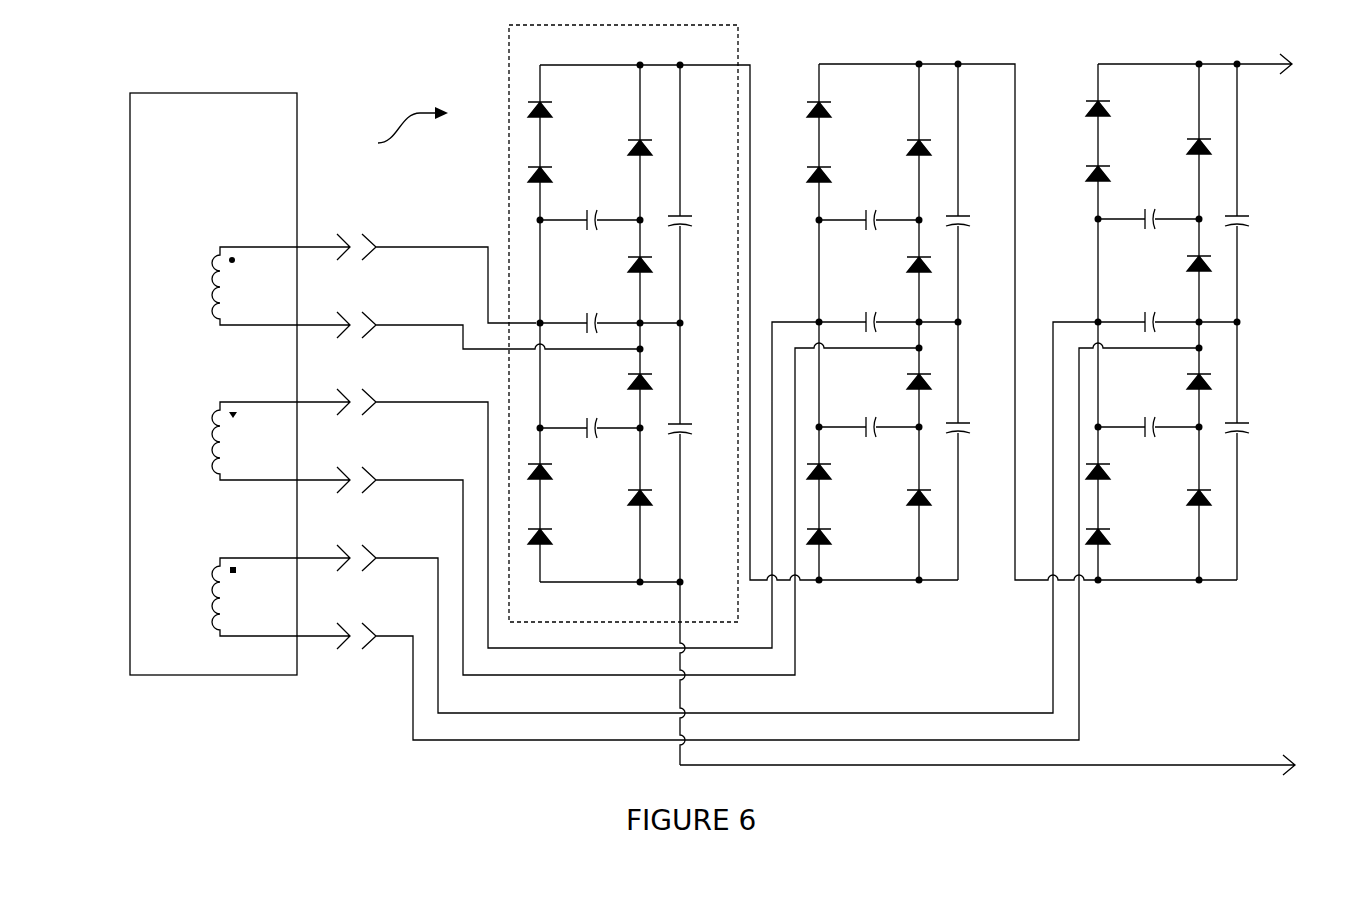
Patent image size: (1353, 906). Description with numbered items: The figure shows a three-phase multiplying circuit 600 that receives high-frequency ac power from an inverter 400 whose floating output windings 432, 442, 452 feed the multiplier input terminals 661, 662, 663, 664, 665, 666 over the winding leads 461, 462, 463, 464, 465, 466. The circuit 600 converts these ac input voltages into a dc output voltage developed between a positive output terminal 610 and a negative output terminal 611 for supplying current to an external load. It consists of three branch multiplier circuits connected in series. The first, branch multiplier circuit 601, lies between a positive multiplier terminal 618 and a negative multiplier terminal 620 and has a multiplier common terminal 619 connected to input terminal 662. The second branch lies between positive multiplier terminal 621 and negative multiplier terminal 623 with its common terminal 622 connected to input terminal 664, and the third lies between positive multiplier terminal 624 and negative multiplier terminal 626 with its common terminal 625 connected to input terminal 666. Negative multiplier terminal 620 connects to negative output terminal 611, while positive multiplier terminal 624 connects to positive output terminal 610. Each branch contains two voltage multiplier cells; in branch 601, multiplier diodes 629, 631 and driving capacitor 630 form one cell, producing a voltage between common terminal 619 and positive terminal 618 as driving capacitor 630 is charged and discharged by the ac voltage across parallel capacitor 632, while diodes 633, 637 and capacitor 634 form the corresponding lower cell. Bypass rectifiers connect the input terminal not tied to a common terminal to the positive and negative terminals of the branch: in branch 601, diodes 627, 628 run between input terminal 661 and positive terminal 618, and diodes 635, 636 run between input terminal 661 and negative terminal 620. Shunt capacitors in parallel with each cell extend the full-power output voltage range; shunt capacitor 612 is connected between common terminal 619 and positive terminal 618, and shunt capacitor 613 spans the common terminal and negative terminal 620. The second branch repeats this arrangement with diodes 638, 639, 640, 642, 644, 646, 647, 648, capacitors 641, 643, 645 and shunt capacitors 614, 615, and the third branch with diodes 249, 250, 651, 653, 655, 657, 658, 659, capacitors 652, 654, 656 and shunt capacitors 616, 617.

The inverter 400 is at (207, 676).
The winding 432 is at (214, 264).
The winding 442 is at (214, 419).
The winding 452 is at (214, 574).
The winding lead 461 is at (309, 245).
The winding lead 462 is at (309, 323).
The winding lead 463 is at (309, 400).
The winding lead 464 is at (309, 478).
The winding lead 465 is at (309, 556).
The winding lead 466 is at (309, 634).
The multiplier input terminal 661 is at (373, 245).
The multiplier input terminal 662 is at (373, 323).
The multiplier input terminal 663 is at (373, 400).
The multiplier input terminal 664 is at (373, 478).
The multiplier input terminal 665 is at (373, 556).
The multiplier input terminal 666 is at (373, 634).
The three-phase multiplying circuit 600 is at (392, 131).
The branch multiplier circuit 601 is at (509, 60).
The positive output terminal 610 is at (1253, 62).
The negative output terminal 611 is at (1253, 763).
The shunt capacitor 612 is at (684, 229).
The filter capacitor 613 is at (684, 437).
The filter capacitor 614 is at (962, 229).
The filter capacitor 615 is at (962, 437).
The shunt capacitor 616 is at (1242, 229).
The filter capacitor 617 is at (1242, 437).
The positive multiplier terminal 618 is at (593, 65).
The multiplier common terminal 619 is at (681, 322).
The negative multiplier terminal 620 is at (586, 583).
The positive multiplier terminal 621 is at (873, 64).
The multiplier common terminal 622 is at (960, 322).
The negative multiplier terminal 623 is at (865, 581).
The positive multiplier terminal 624 is at (1141, 64).
The multiplier common terminal 625 is at (1240, 322).
The negative multiplier terminal 626 is at (1144, 581).
The diode 627 is at (553, 107).
The diode 628 is at (553, 172).
The multiplier diode 629 is at (627, 148).
The driving capacitor 630 is at (587, 218).
The multiplier diode 631 is at (627, 265).
The parallel capacitor 632 is at (587, 321).
The diode 633 is at (627, 383).
The capacitor 634 is at (587, 426).
The diode 635 is at (553, 470).
The diode 636 is at (553, 537).
The diode 637 is at (627, 498).
The diode 638 is at (832, 106).
The diode 639 is at (832, 172).
The diode 640 is at (906, 147).
The capacitor 641 is at (866, 218).
The diode 642 is at (906, 265).
The capacitor 643 is at (866, 321).
The diode 644 is at (906, 383).
The capacitor 645 is at (866, 426).
The diode 646 is at (832, 470).
The diode 647 is at (832, 537).
The diode 648 is at (906, 498).
The diode 249 is at (1085, 112).
The diode 250 is at (1085, 177).
The diode 651 is at (1186, 147).
The capacitor 652 is at (1146, 218).
The diode 653 is at (1186, 265).
The capacitor 654 is at (1146, 321).
The diode 655 is at (1186, 383).
The capacitor 656 is at (1146, 426).
The diode 657 is at (1112, 470).
The diode 658 is at (1112, 537).
The diode 659 is at (1186, 498).